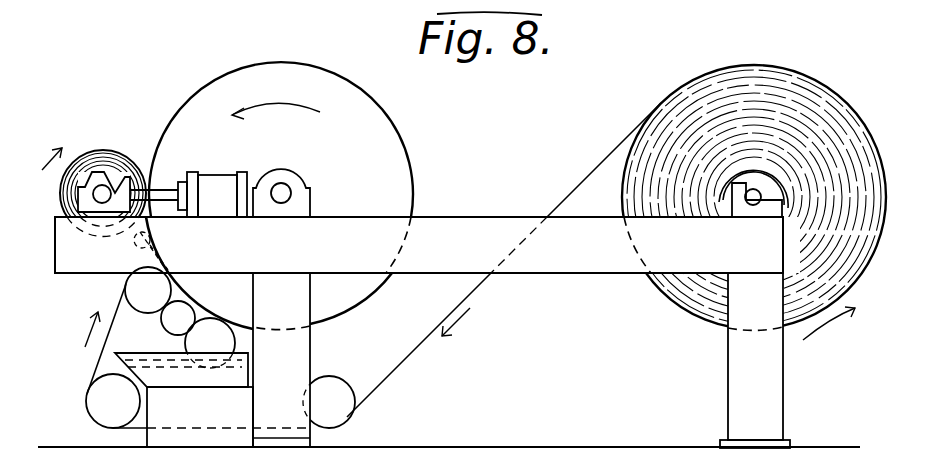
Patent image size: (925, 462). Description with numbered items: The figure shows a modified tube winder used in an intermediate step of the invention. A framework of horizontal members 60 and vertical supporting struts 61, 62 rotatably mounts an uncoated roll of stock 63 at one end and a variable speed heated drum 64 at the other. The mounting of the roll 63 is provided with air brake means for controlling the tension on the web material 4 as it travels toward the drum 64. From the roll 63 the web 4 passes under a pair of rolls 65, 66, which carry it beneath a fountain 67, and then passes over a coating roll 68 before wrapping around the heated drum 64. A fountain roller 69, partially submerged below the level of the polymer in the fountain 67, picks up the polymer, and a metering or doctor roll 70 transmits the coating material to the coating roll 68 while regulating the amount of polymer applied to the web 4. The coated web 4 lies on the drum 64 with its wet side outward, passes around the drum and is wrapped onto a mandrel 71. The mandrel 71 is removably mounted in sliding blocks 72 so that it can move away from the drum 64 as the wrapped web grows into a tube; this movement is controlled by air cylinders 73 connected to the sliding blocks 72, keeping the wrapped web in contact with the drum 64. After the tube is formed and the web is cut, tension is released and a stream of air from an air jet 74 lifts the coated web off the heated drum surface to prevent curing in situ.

The web material 4 is at (590, 172).
The horizontal members 60 is at (593, 258).
The vertical supporting strut 61 is at (735, 375).
The vertical supporting strut 62 is at (312, 347).
The uncoated roll of stock 63 is at (714, 69).
The variable speed heated drum 64 is at (405, 152).
The roll 65 is at (334, 384).
The roll 66 is at (87, 406).
The fountain 67 is at (177, 377).
The coating roll 68 is at (128, 284).
The fountain roller 69 is at (222, 335).
The metering or doctor roll 70 is at (183, 310).
The mandrel 71 is at (92, 162).
The sliding blocks 72 is at (85, 192).
The air cylinders 73 is at (213, 180).
The air jet 74 is at (127, 250).